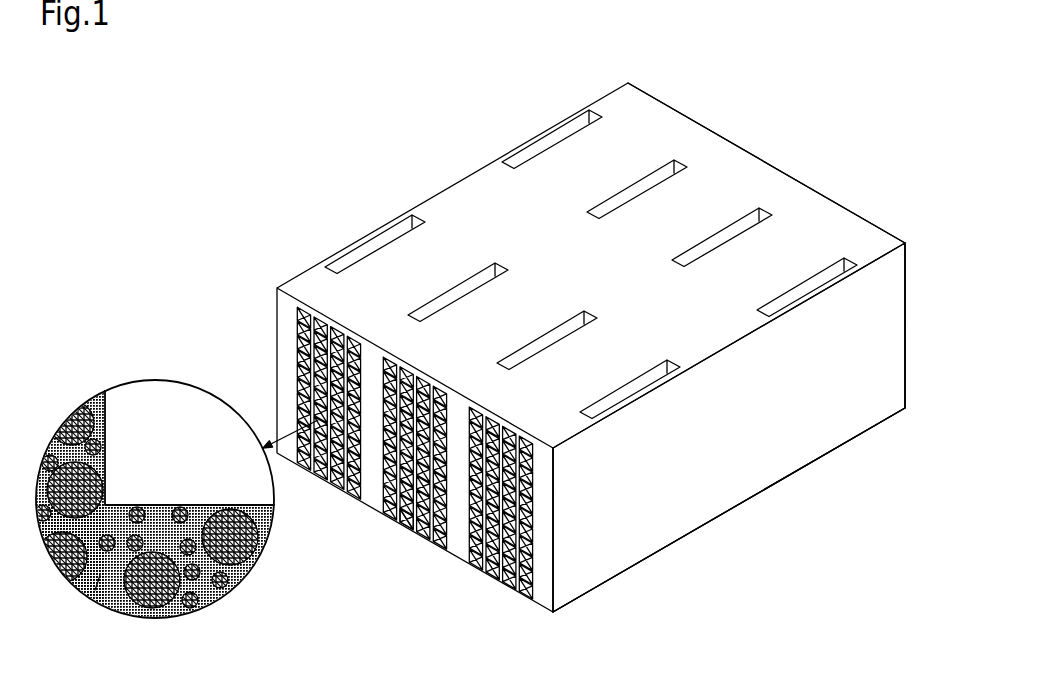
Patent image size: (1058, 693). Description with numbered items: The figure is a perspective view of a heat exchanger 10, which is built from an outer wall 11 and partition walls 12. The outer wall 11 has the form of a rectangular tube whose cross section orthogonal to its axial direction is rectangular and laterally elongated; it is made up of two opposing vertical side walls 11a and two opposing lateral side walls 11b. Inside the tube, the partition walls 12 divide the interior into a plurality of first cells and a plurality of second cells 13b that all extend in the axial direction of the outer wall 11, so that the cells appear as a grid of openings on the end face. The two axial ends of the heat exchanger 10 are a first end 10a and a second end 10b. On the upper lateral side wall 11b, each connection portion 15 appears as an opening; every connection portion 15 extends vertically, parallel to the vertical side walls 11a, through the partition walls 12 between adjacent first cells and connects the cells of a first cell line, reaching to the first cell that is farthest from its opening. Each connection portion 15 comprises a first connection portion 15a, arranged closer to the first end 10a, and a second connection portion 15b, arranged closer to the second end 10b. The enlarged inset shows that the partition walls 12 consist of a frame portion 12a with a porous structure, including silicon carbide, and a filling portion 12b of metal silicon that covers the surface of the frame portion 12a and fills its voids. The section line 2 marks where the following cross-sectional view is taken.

The heat exchanger 10 is at (753, 110).
The first end 10a is at (560, 597).
The second end 10b is at (905, 409).
The outer wall 11 is at (780, 460).
The vertical side walls 11a is at (730, 498).
The lateral side walls 11b is at (837, 212).
The partition walls 12 is at (111, 404).
The frame portion 12a is at (233, 590).
The filling portion 12b is at (95, 590).
The second cells 13b is at (408, 518).
The connection portion 15 is at (337, 198).
The first connection portion 15a is at (373, 243).
The second connection portion 15b is at (550, 140).
The line 2- 2 is at (328, 113).